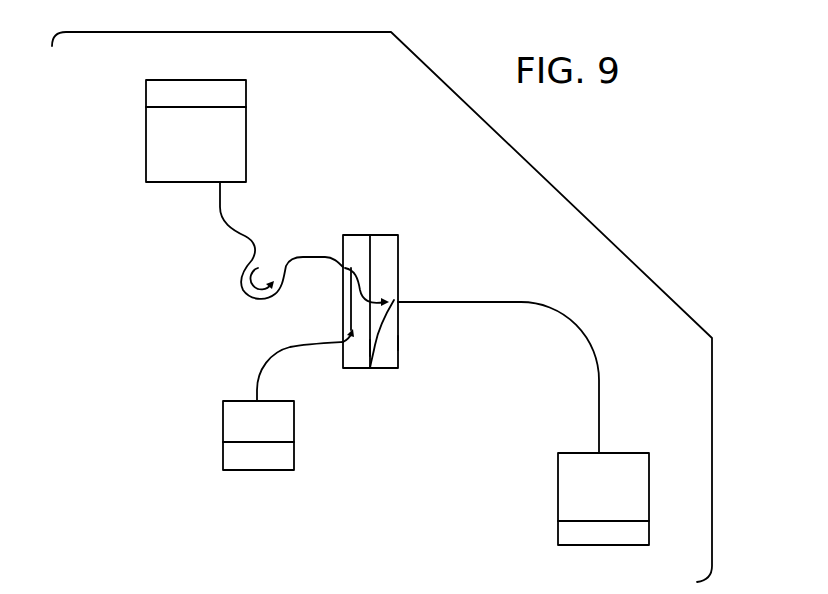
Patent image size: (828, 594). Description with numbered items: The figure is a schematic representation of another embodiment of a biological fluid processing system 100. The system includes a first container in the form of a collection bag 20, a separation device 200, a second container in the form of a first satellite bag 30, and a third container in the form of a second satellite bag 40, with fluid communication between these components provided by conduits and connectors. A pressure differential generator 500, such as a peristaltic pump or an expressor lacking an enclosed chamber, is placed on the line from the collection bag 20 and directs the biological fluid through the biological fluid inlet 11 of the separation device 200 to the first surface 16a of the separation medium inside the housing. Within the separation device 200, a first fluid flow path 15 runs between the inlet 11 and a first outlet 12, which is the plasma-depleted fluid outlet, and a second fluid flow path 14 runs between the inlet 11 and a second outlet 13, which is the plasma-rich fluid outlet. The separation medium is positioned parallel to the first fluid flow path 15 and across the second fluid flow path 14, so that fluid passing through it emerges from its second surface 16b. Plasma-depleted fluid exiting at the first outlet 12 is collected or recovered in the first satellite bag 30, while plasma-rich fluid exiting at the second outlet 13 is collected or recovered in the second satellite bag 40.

The biological fluid processing system 100 is at (552, 188).
The collection bag 20 is at (147, 170).
The first satellite bag 30 is at (223, 458).
The second satellite bag 40 is at (558, 533).
The separation device 200 is at (370, 226).
The pressure differential generator 500 is at (269, 262).
The biological fluid inlet 11 is at (341, 265).
The first outlet 12 is at (337, 348).
The second outlet 13 is at (405, 302).
The second fluid flow path 14 is at (398, 343).
The first fluid flow path 15 is at (352, 318).
The first surface 16a is at (362, 368).
The second surface 16b is at (370, 348).